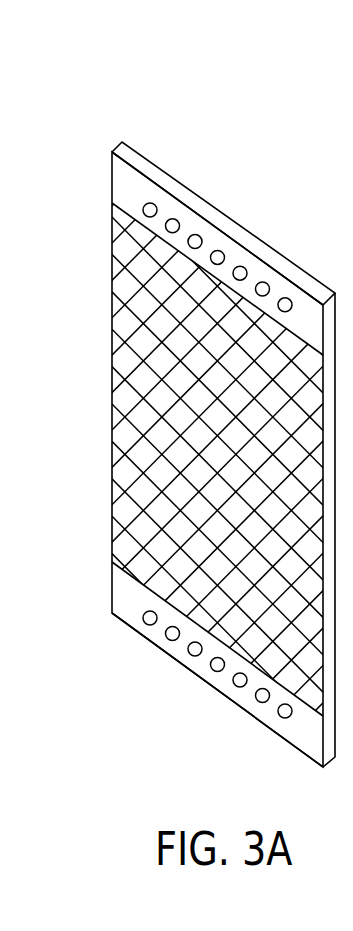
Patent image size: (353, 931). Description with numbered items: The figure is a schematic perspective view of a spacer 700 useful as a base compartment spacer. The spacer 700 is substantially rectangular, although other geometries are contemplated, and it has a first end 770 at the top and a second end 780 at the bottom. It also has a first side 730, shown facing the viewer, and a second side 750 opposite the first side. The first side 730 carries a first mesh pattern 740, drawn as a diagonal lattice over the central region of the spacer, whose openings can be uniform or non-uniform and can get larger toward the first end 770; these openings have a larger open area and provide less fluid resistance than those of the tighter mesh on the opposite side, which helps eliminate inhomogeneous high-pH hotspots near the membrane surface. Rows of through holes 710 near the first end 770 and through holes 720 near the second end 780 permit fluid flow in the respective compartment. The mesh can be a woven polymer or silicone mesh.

The spacer 700 is at (209, 109).
The through holes 710 is at (195, 242).
The through holes 720 is at (195, 649).
The first side 730 is at (112, 505).
The first mesh pattern 740 is at (133, 395).
The second side 750 is at (291, 232).
The first end 770 is at (229, 211).
The second end 780 is at (201, 708).